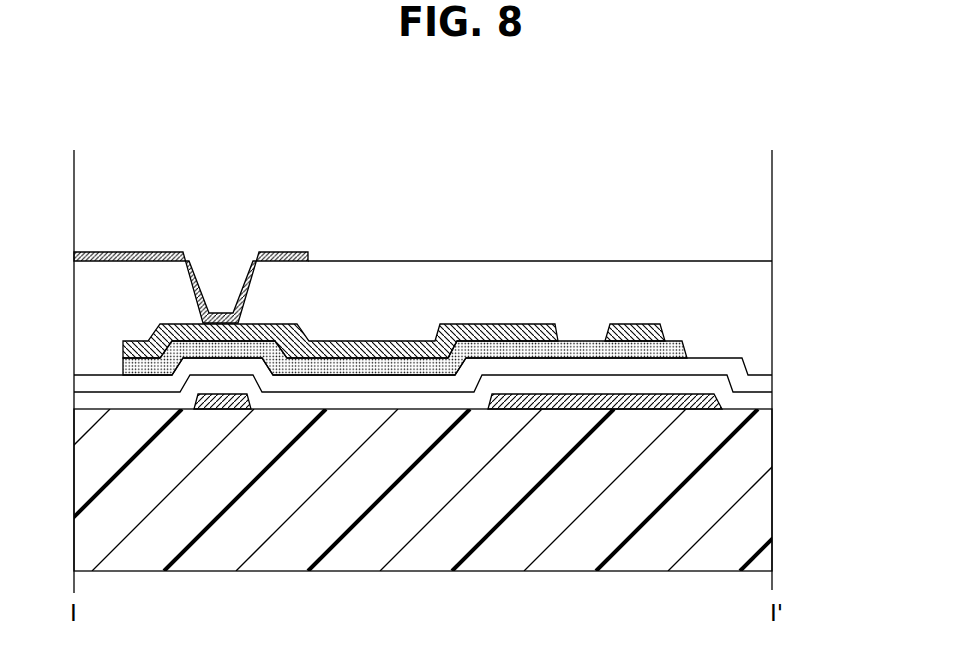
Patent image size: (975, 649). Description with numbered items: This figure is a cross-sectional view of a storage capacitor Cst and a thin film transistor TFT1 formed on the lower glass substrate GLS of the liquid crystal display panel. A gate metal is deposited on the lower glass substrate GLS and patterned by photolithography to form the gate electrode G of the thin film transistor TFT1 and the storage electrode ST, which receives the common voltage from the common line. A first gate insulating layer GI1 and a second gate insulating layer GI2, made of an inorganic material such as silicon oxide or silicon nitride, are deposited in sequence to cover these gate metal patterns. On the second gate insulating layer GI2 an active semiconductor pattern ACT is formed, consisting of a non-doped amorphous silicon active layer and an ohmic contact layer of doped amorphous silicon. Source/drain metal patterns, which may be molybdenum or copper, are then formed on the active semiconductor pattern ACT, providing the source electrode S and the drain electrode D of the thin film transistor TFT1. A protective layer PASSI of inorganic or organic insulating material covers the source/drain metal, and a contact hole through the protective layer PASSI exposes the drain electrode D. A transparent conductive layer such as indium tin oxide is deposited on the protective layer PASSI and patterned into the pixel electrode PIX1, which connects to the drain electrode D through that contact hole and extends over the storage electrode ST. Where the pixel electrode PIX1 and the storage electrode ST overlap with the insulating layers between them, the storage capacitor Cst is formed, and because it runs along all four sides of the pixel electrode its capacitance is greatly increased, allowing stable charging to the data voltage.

The lower glass substrate GLS is at (760, 504).
The storage electrode ST is at (193, 402).
The gate electrode G is at (700, 409).
The first gate insulating layer GI1 is at (765, 400).
The second gate insulating layer GI2 is at (762, 382).
The active semiconductor pattern ACT is at (687, 348).
The drain electrode D is at (500, 324).
The source electrode S is at (636, 324).
The protective layer PASSI is at (760, 283).
The pixel electrode PIX1 is at (276, 250).
The storage capacitor Cst is at (310, 187).
The thin film transistor TFT1 is at (772, 169).